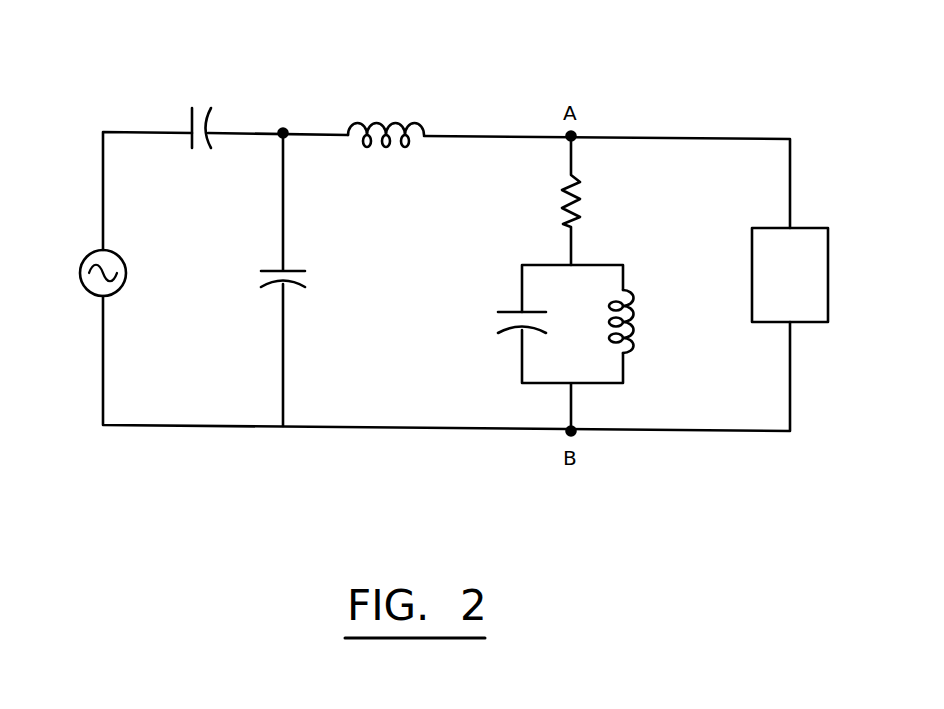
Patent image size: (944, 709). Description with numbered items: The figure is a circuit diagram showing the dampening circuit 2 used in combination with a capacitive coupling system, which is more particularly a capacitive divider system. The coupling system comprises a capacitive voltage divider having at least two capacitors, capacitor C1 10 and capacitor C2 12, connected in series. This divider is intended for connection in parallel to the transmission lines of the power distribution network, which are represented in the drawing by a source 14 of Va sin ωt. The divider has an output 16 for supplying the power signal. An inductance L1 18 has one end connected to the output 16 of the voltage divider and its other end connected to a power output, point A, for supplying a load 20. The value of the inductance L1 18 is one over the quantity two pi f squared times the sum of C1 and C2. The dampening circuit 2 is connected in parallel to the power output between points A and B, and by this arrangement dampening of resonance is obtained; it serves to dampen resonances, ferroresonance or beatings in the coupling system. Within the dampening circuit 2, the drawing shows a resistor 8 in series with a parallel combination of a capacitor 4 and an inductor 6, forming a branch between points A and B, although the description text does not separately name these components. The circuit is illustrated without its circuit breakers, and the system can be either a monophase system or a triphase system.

The dampening circuit 2 is at (547, 331).
The capacitor 4 is at (512, 307).
The inductor 6 is at (634, 323).
The resistor 8 is at (573, 219).
The capacitor C1 10 is at (190, 131).
The capacitor C2 12 is at (273, 268).
The source 14 is at (81, 262).
The output 16 is at (284, 131).
The inductance L1 18 is at (387, 122).
The load 20 is at (829, 262).